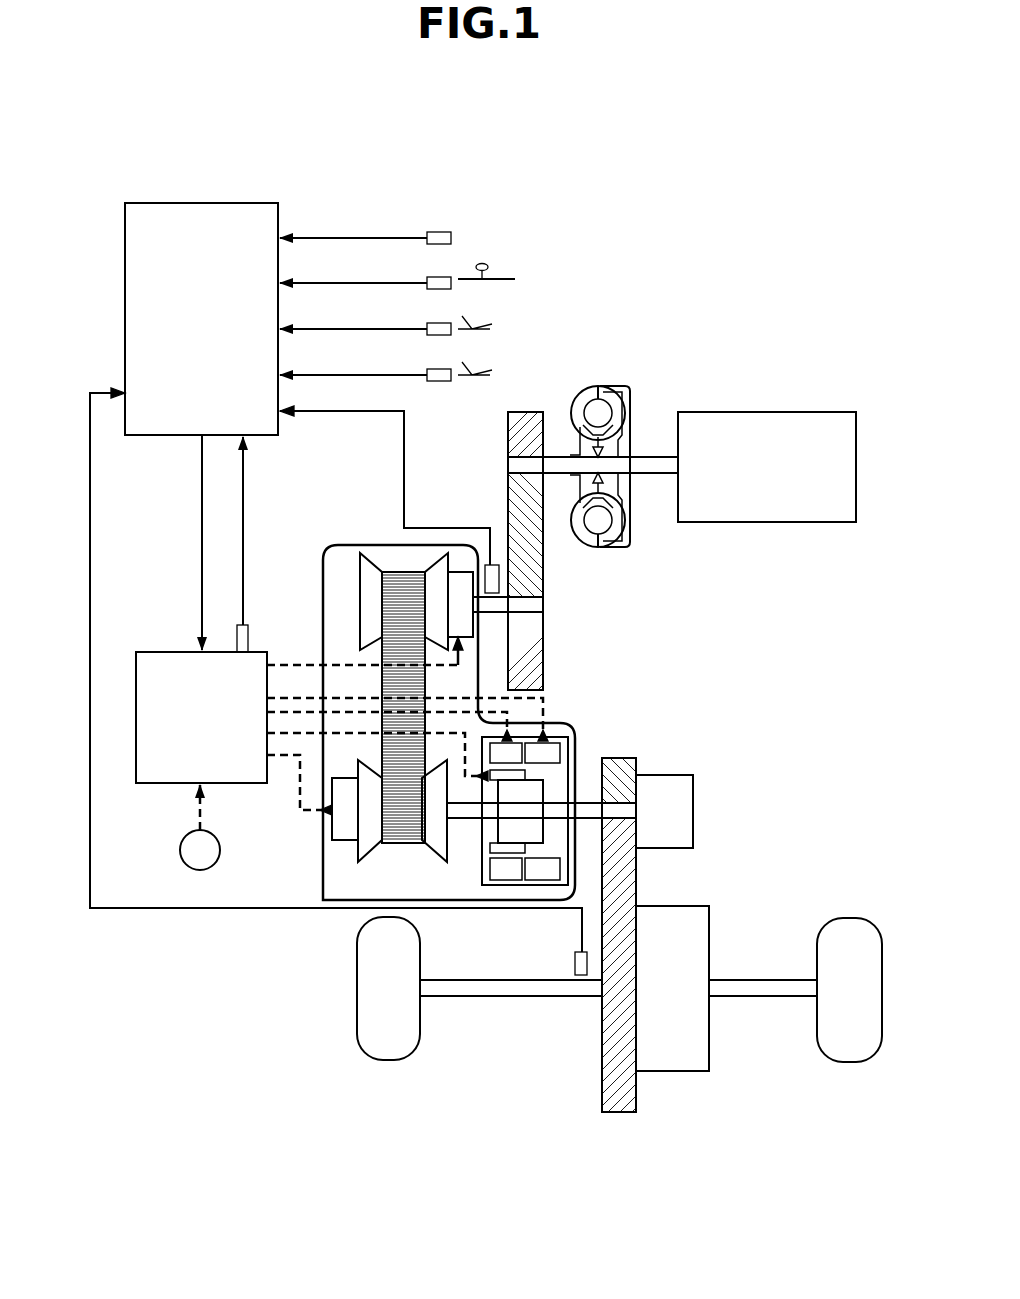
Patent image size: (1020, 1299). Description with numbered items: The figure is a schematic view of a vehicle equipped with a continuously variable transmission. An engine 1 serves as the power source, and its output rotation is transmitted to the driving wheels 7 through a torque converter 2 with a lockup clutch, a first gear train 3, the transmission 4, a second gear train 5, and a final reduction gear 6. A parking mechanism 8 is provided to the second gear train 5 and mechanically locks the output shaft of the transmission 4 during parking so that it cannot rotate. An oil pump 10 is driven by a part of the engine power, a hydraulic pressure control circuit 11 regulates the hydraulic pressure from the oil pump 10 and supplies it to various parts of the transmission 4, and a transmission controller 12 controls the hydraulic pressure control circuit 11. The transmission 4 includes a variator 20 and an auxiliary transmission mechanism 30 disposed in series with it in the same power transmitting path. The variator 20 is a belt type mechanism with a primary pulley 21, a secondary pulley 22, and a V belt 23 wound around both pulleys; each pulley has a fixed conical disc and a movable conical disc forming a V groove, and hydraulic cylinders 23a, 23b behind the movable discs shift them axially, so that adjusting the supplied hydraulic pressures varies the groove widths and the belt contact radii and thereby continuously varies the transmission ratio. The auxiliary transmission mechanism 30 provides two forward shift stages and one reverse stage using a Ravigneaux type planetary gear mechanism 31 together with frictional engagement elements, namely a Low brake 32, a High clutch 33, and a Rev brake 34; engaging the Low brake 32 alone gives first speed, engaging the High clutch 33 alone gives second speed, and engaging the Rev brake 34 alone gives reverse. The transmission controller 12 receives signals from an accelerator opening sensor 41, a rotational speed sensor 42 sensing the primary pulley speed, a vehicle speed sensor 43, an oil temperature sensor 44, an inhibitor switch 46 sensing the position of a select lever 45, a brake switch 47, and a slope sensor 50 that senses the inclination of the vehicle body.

The engine 1 is at (840, 421).
The torque converter 2 is at (632, 405).
The first gear train 3 is at (527, 412).
The transmission 4 is at (348, 545).
The second gear train 5 is at (618, 1115).
The final reduction gear 6 is at (666, 1066).
The driving wheels 7 is at (387, 1050).
The parking mechanism 8 is at (680, 800).
The oil pump 10 is at (185, 835).
The hydraulic pressure control circuit 11 is at (155, 656).
The transmission controller 12 is at (268, 207).
The variator 20 is at (346, 572).
The primary pulley 21 is at (370, 600).
The secondary pulley 22 is at (368, 820).
The V belt 23 is at (404, 572).
The hydraulic cylinder 23a is at (462, 580).
The hydraulic cylinder 23b is at (345, 815).
The auxiliary transmission mechanism 30 is at (578, 735).
The Ravigneaux type planetary gear mechanism 31 is at (533, 790).
The Low brake 32 is at (507, 748).
The High clutch 33 is at (500, 850).
The Rev brake 34 is at (545, 750).
The accelerator opening sensor 41 is at (440, 335).
The rotational speed sensor 42 is at (490, 568).
The vehicle speed sensor 43 is at (577, 962).
The oil temperature sensor 44 is at (248, 637).
The select lever 45 is at (490, 277).
The inhibitor switch 46 is at (440, 279).
The brake switch 47 is at (440, 380).
The slope sensor 50 is at (440, 233).